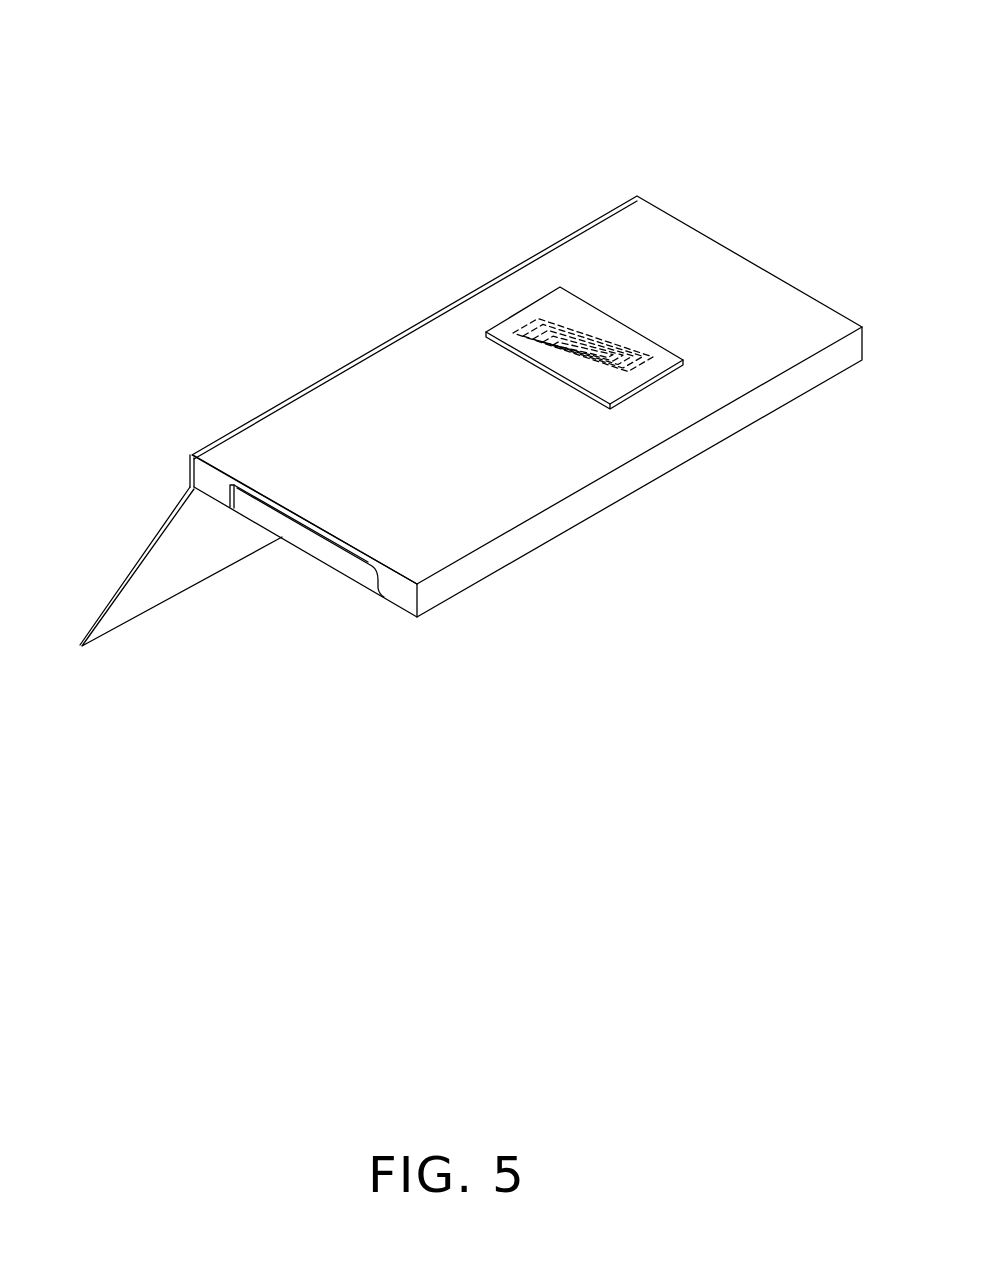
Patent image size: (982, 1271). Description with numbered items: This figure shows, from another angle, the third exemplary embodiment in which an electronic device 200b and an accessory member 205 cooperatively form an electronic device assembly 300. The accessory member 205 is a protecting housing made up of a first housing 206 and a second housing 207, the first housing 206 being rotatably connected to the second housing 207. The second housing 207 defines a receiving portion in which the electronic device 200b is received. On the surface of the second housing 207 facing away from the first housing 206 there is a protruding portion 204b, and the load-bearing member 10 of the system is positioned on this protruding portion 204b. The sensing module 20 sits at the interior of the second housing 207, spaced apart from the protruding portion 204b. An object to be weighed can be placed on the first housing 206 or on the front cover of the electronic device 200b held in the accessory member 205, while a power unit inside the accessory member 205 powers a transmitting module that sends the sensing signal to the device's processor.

The electronic device assembly 300 is at (380, 90).
The load-bearing member 10 is at (530, 332).
The sensing module 20 is at (538, 317).
The protruding portion 204b is at (637, 377).
The accessory member 205 is at (164, 497).
The first housing 206 is at (155, 533).
The second housing 207 is at (215, 457).
The electronic device 200b is at (355, 560).